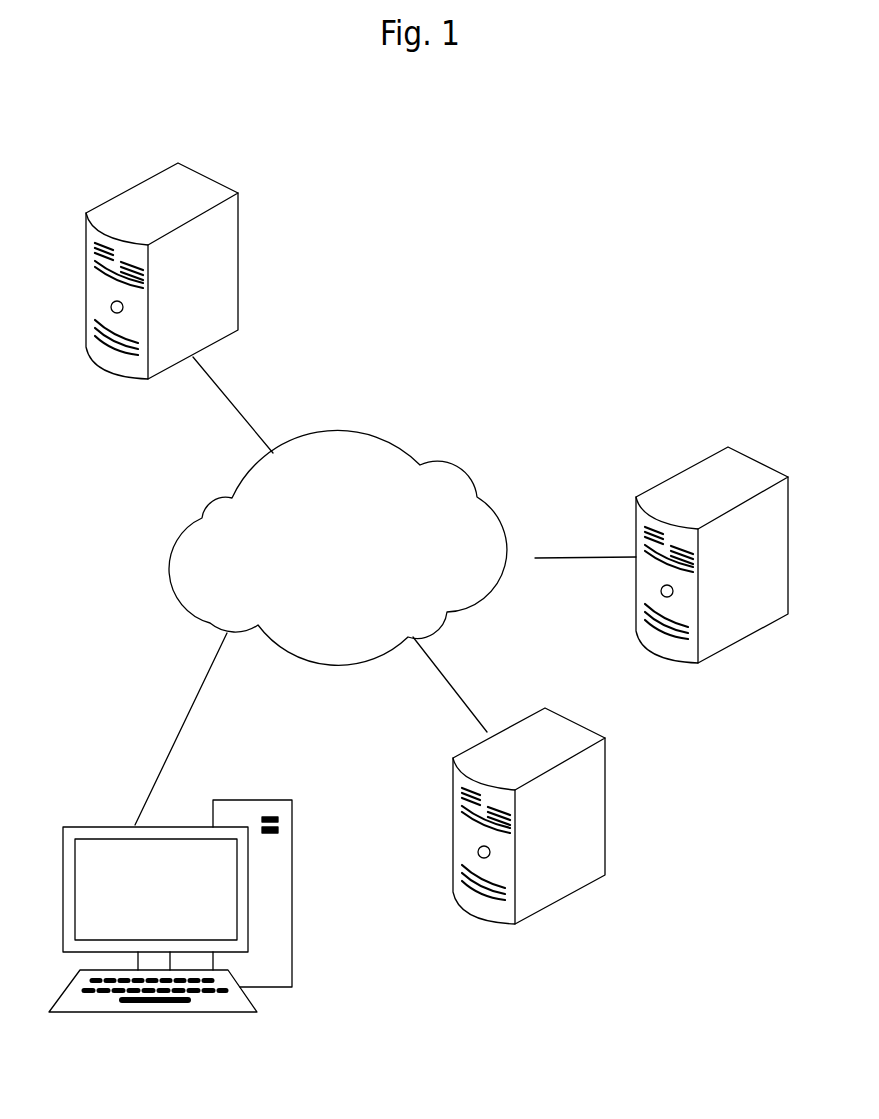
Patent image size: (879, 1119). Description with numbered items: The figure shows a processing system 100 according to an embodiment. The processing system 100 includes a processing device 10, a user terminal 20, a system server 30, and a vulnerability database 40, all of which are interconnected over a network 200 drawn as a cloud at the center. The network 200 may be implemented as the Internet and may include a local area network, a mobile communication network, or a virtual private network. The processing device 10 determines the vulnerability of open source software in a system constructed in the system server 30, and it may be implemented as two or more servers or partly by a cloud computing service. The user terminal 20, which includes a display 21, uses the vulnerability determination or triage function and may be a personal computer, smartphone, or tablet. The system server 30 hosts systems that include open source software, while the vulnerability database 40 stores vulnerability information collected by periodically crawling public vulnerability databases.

The processing system 100 is at (541, 244).
The network 200 is at (341, 433).
The processing device 10 is at (747, 458).
The user terminal 20 is at (250, 800).
The display 21 is at (105, 850).
The system server 30 is at (195, 178).
The vulnerability database 40 is at (563, 718).